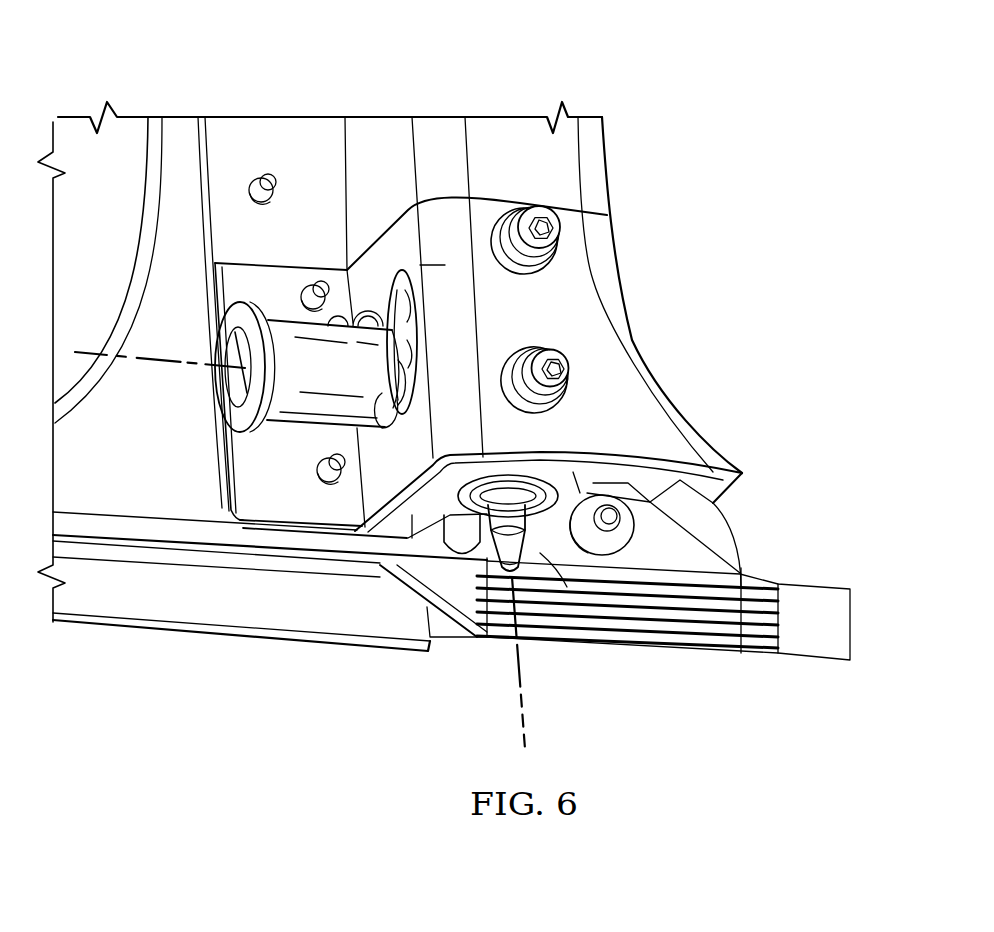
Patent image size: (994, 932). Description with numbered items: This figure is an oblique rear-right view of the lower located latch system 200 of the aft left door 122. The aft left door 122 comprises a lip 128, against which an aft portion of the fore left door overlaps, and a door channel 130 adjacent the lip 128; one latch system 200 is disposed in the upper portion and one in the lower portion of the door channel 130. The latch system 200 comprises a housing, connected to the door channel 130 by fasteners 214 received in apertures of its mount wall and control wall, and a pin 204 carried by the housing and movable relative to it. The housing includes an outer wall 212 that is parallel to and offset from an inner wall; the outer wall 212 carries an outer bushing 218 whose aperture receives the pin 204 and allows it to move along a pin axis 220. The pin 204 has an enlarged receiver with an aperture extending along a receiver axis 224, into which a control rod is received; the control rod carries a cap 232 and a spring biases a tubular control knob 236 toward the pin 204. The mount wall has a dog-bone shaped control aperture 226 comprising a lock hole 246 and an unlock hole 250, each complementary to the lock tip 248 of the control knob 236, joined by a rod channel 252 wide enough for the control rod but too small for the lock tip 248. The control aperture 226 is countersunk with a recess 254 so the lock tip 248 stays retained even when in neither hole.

The latch system 200 is at (472, 93).
The aft left door 122 is at (188, 152).
The door channel 130 is at (596, 168).
The fasteners 214 is at (560, 228).
The recess 254 is at (393, 284).
The control aperture 226 is at (428, 279).
The unlock hole 250 is at (408, 307).
The rod channel 252 is at (408, 352).
The lock tip 248 is at (413, 376).
The lock hole 246 is at (386, 398).
The receiver axis 224 is at (153, 358).
The cap 232 is at (233, 385).
The control knob 236 is at (238, 420).
The outer wall 212 is at (365, 505).
The outer bushing 218 is at (563, 500).
The pin 204 is at (518, 548).
The pin axis 220 is at (529, 747).
The lip 128 is at (667, 648).